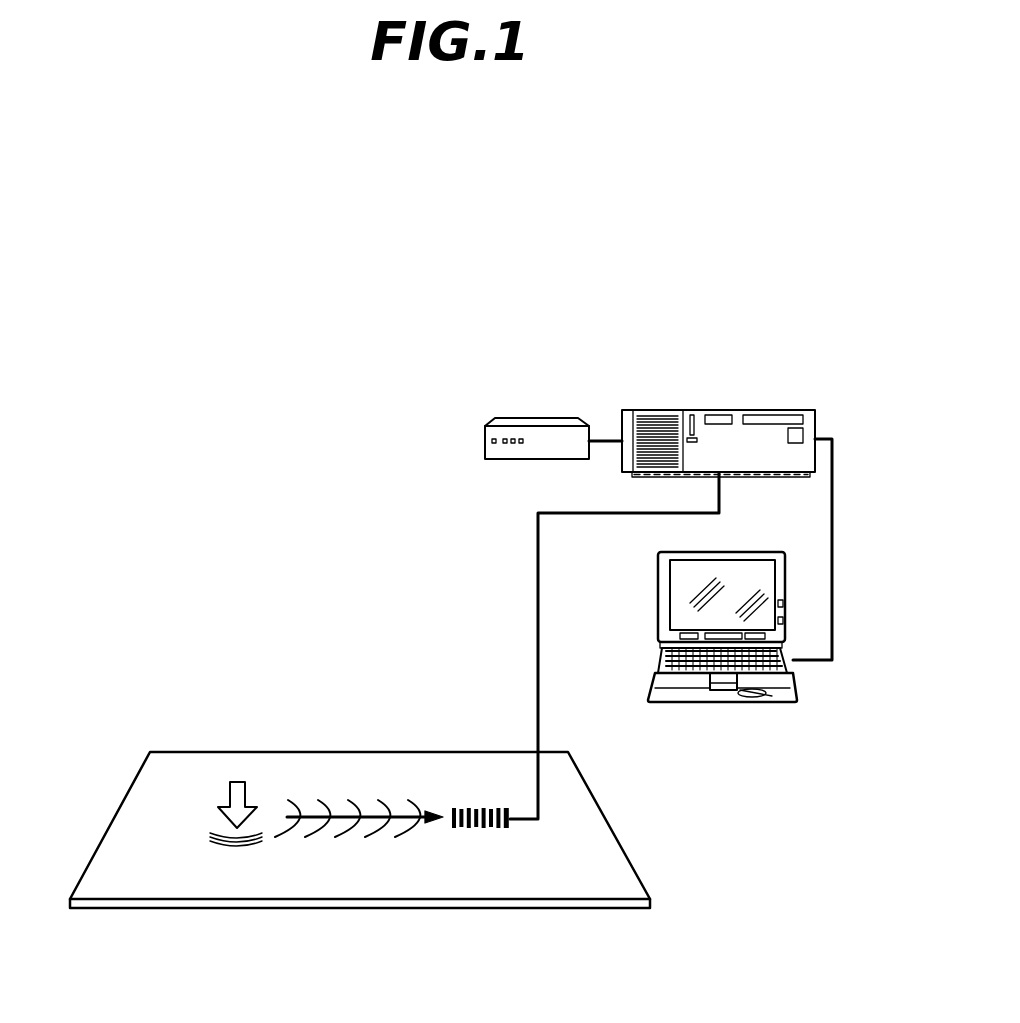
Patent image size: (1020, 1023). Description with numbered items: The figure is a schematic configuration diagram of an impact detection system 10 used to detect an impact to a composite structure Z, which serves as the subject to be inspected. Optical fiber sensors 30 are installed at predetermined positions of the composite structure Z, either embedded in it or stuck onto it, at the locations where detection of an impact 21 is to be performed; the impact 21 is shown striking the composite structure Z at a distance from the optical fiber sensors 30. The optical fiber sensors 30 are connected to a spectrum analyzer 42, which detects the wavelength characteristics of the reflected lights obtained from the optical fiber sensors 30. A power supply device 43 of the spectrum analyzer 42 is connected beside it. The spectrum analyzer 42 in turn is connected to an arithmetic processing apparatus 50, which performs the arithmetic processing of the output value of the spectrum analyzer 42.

The impact detection system 10 is at (809, 246).
The composite structure Z is at (548, 884).
The impact 21 is at (237, 783).
The optical fiber sensors 30 is at (475, 808).
The power supply device 43 is at (544, 422).
The spectrum analyzer 42 is at (738, 408).
The arithmetic processing apparatus 50 is at (658, 600).